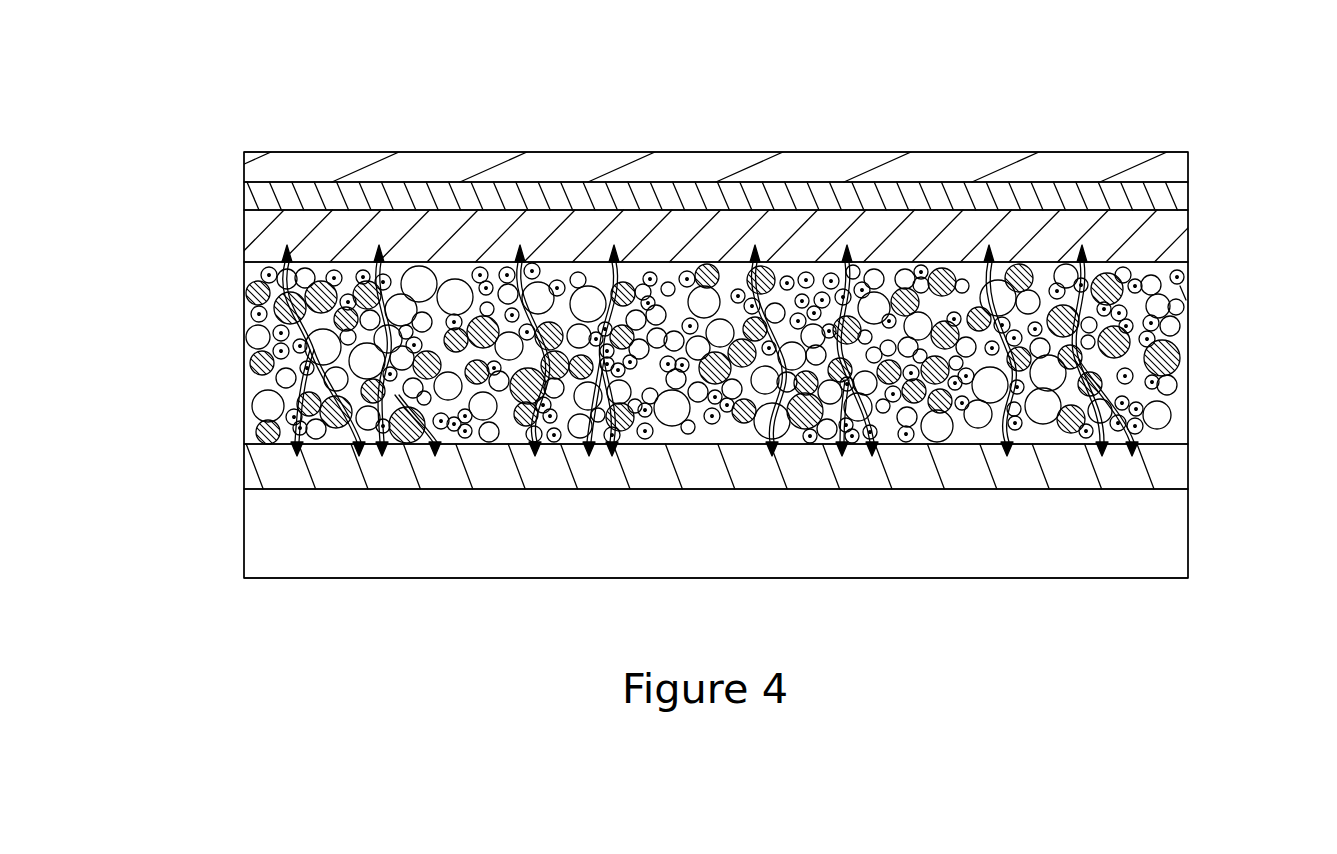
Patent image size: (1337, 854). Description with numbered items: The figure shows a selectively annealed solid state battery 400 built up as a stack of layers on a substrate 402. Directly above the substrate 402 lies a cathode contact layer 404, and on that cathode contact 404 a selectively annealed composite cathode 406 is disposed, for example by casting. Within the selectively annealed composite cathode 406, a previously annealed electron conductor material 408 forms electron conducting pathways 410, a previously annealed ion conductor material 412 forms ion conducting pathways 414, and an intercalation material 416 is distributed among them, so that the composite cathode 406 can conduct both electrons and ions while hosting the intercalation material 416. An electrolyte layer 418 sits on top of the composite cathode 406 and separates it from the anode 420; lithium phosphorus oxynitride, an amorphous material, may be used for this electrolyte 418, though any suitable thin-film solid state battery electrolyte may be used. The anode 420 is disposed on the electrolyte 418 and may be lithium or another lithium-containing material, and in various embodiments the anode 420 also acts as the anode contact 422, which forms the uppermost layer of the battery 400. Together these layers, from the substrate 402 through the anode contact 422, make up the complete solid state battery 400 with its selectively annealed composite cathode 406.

The selectively annealed solid state battery 400 is at (1137, 101).
The substrate 402 is at (695, 542).
The cathode contact layer 404 is at (1190, 467).
The selectively annealed composite cathode 406 is at (1190, 320).
The previously annealed electron conductor material 408 is at (244, 328).
The electron conducting pathways 410 is at (292, 453).
The previously annealed ion conductor material 412 is at (1189, 293).
The ion conducting pathways 414 is at (435, 445).
The intercalation material 416 is at (244, 282).
The electrolyte layer 418 is at (243, 238).
The anode 420 is at (1190, 193).
The anode contact 422 is at (242, 165).